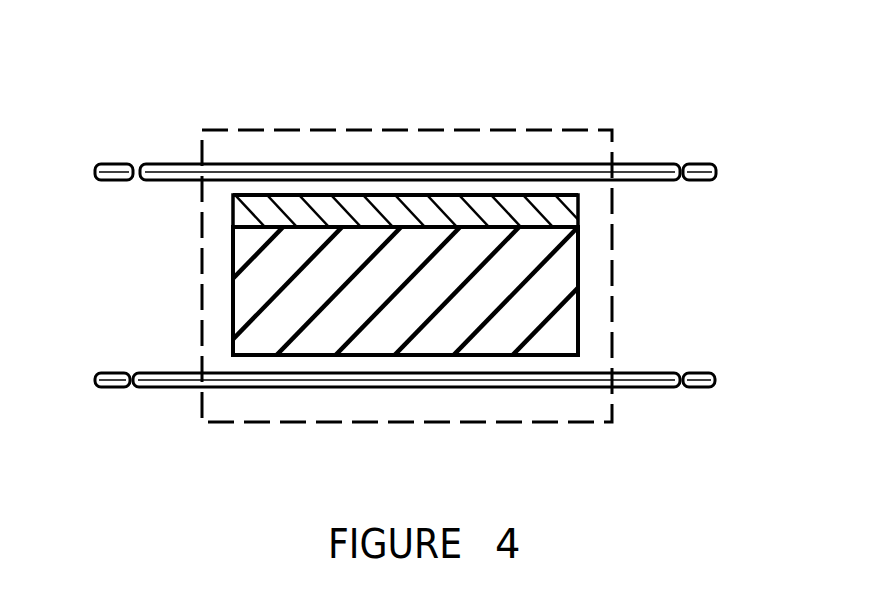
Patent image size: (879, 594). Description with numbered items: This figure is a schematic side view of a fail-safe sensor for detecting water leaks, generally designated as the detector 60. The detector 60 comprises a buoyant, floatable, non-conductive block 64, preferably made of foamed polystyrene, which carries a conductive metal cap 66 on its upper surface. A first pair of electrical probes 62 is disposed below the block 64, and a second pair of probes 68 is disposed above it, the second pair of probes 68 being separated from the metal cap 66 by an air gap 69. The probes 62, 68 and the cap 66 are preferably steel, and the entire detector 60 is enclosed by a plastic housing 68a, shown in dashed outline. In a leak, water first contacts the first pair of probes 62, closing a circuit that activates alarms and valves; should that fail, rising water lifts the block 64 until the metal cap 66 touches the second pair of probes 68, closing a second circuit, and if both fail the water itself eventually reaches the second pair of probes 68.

The detector 60 is at (477, 98).
The first pair of electrical probes 62 is at (660, 389).
The block 64 is at (582, 327).
The metal cap 66 is at (580, 215).
The second pair of probes 68 is at (652, 163).
The plastic housing 68a is at (348, 130).
The air gap 69 is at (575, 188).